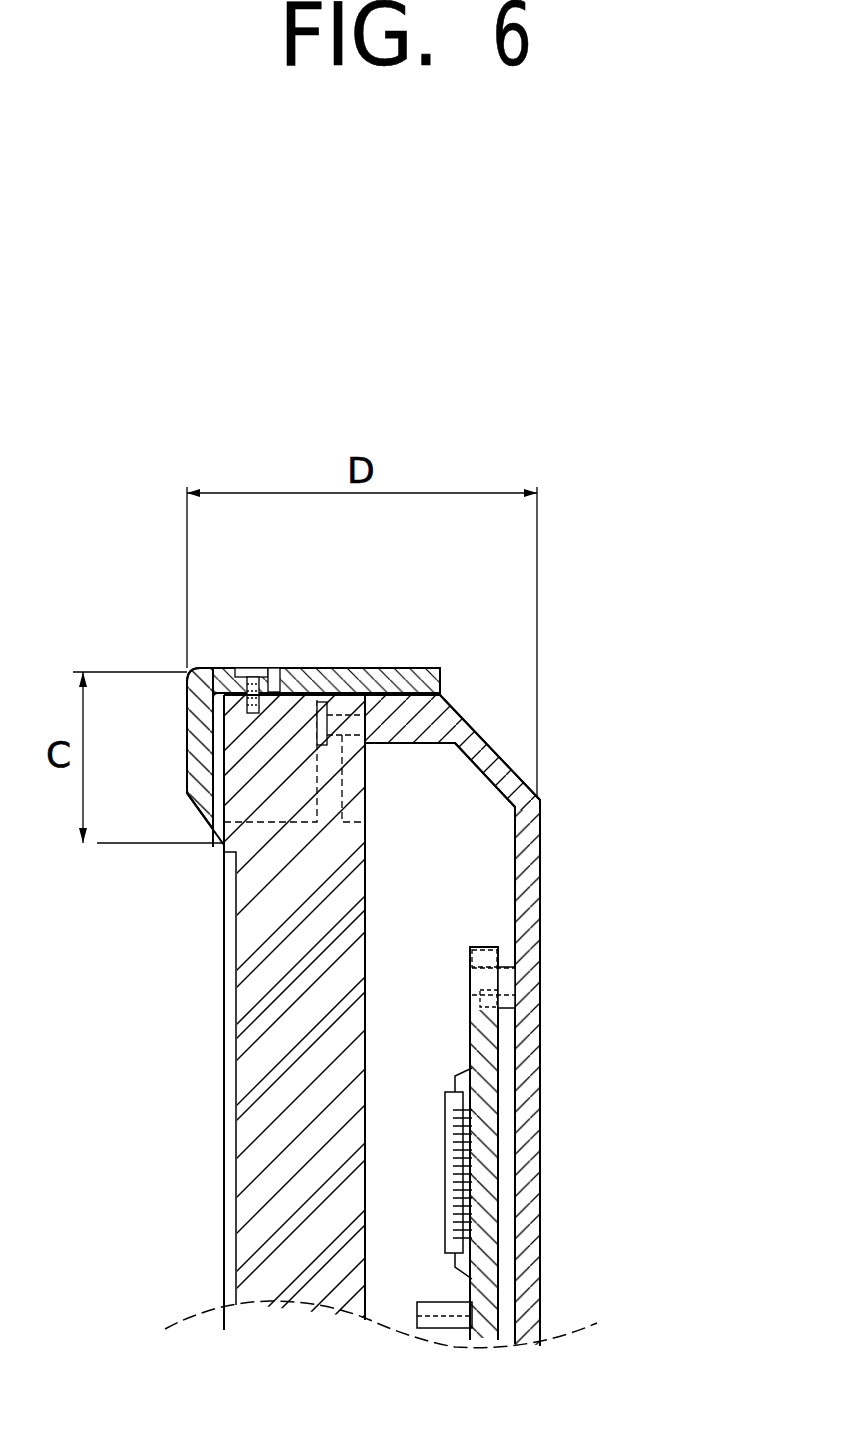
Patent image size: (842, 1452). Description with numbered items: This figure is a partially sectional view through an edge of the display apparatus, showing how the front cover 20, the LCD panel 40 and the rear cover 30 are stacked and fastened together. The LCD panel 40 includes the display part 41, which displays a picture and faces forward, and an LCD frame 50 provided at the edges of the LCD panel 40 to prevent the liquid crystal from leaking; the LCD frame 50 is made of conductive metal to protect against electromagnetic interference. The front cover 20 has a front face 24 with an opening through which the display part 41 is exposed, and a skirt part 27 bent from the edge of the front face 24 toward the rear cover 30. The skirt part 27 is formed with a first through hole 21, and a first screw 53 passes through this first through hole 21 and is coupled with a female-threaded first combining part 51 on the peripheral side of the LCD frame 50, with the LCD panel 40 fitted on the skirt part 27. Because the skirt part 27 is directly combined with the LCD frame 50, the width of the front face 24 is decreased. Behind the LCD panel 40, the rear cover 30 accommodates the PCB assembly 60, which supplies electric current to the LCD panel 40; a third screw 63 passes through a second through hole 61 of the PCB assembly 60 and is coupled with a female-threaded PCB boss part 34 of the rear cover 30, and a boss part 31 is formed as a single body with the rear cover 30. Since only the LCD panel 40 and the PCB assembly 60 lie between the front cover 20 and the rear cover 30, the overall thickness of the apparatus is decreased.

The front cover 20 is at (229, 655).
The first through hole 21 is at (203, 674).
The front face 24 is at (187, 745).
The skirt part 27 is at (413, 668).
The first screw 53 is at (255, 667).
The first combining part 51 is at (342, 668).
The LCD panel 40 is at (110, 920).
The display part 41 is at (228, 1136).
The LCD frame 50 is at (223, 848).
The rear cover 30 is at (548, 1113).
The boss part 31 is at (417, 745).
The PCB assembly 60 is at (505, 1188).
The second through hole 61 is at (502, 958).
The PCB boss part 34 is at (513, 968).
The third screw 63 is at (513, 993).